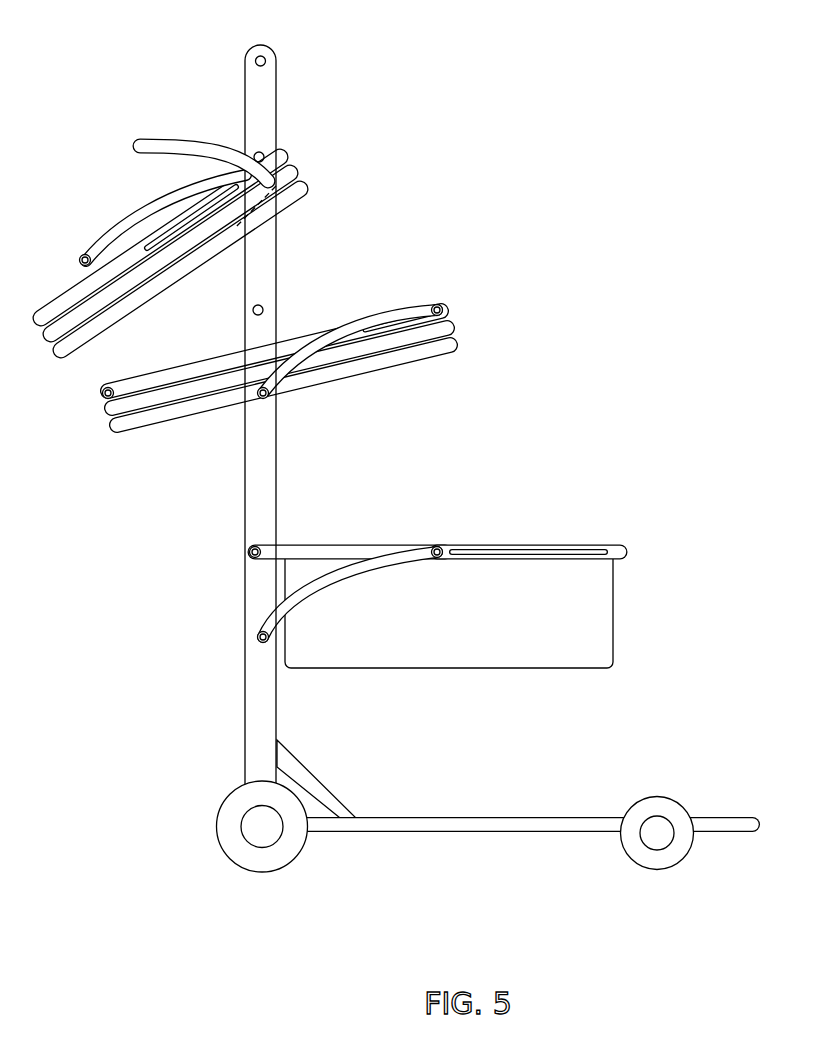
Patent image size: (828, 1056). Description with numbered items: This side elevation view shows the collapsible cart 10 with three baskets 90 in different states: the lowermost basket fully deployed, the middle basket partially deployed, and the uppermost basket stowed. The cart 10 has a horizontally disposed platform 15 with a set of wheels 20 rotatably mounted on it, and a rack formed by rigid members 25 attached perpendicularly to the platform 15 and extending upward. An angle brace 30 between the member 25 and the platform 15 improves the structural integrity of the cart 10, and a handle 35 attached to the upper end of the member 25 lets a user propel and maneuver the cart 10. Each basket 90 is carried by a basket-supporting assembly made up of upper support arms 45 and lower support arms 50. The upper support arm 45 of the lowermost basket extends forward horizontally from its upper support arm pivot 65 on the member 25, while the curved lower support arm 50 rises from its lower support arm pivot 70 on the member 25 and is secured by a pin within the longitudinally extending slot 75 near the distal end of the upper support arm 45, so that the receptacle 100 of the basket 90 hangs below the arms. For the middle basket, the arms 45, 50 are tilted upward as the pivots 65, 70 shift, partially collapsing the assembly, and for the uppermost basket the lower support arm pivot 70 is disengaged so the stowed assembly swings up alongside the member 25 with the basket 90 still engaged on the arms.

The collapsible cart 10 is at (404, 471).
The platform 15 is at (487, 833).
The wheels 20 is at (263, 872).
The rigid members 25 is at (263, 95).
The angle braces 30 is at (315, 773).
The handle 35 is at (180, 138).
The upper support arms 45 is at (293, 343).
The lower support arms 50 is at (130, 220).
The upper support arm pivots 65 is at (106, 392).
The lower support arm pivots 70 is at (86, 256).
The slot 75 is at (168, 233).
The baskets 90 is at (376, 418).
The receptacle 100 is at (300, 196).